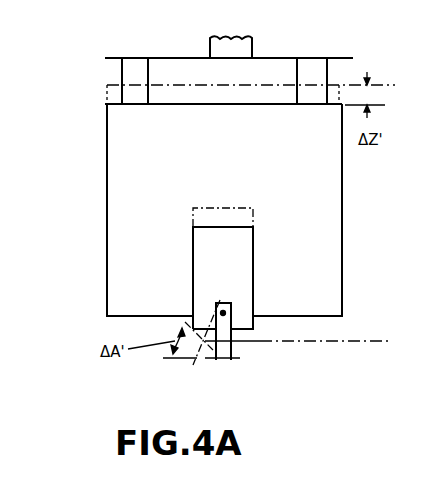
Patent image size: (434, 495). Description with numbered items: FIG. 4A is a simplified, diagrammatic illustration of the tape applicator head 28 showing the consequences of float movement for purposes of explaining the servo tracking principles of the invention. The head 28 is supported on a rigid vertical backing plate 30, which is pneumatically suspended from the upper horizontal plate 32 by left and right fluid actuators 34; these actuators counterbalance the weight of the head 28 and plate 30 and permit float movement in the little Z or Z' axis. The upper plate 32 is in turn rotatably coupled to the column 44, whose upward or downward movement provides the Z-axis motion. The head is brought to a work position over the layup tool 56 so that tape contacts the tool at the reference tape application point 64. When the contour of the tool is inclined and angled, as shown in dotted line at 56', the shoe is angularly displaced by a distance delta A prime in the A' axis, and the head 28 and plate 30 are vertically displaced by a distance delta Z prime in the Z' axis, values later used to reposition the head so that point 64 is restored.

The tape applicator head 28 is at (263, 287).
The backing plate 30 is at (126, 165).
The upper plate 32 is at (168, 58).
The fluid actuators 34 is at (118, 72).
The column 44 is at (236, 44).
The layup tool 56 is at (275, 346).
The inclined layup tool surface 56' is at (181, 324).
The reference tape application point 64 is at (193, 360).